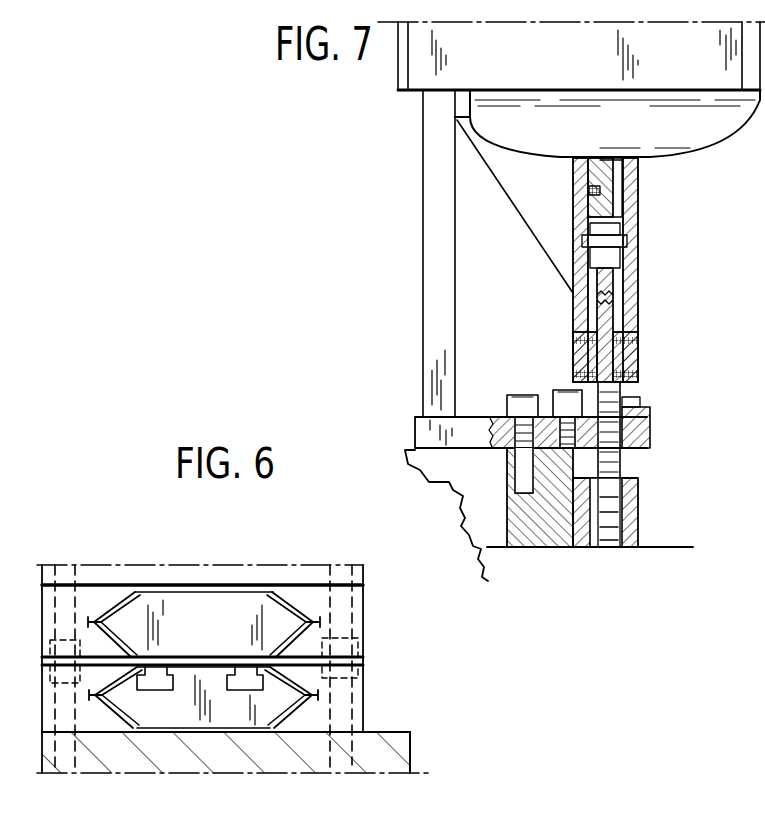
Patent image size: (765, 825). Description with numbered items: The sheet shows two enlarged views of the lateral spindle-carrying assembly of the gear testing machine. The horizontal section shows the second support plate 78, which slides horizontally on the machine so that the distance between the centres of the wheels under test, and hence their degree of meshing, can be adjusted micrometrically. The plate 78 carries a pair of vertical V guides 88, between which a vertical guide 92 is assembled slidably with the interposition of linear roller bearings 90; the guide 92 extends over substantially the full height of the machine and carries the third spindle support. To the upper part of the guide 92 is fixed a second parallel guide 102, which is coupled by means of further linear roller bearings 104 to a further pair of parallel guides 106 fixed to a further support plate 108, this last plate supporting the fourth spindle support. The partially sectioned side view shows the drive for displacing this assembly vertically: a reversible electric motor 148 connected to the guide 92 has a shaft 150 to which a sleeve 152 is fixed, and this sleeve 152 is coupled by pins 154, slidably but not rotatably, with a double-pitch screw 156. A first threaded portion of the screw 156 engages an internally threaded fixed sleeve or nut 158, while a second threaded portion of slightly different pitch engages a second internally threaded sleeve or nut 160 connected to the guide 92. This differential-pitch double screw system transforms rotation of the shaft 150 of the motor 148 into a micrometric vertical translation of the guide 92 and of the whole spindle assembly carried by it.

In FIG. 6, the second support plate 78 is at (283, 752).
In FIG. 6, the vertical V guides 88 is at (357, 713).
In FIG. 6, the linear roller bearings 90 is at (300, 688).
In FIG. 6, the vertical guide 92 is at (183, 712).
In FIG. 6, the second parallel guide 102 is at (217, 603).
In FIG. 6, the linear roller bearings 104 is at (108, 607).
In FIG. 6, the parallel guides 106 is at (93, 603).
In FIG. 6, the further support plate 108 is at (97, 577).
In FIG. 7, the reversible electric motor 148 is at (687, 123).
In FIG. 7, the shaft 150 is at (590, 176).
In FIG. 7, the sleeve 152 is at (628, 262).
In FIG. 7, the pins 154 is at (573, 347).
In FIG. 7, the double-pitch screw 156 is at (573, 270).
In FIG. 7, the fixed sleeve or nut 158 is at (640, 407).
In FIG. 7, the sleeve or nut 160 is at (633, 513).